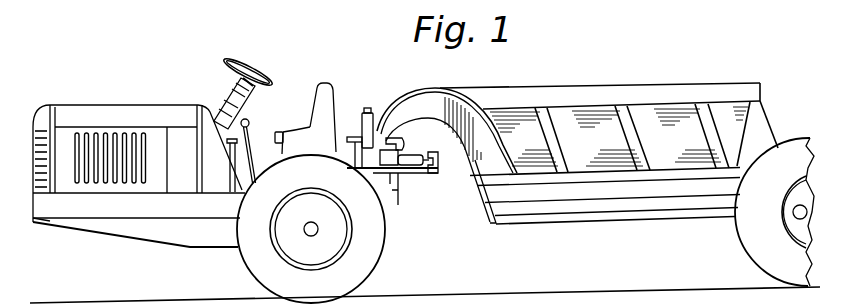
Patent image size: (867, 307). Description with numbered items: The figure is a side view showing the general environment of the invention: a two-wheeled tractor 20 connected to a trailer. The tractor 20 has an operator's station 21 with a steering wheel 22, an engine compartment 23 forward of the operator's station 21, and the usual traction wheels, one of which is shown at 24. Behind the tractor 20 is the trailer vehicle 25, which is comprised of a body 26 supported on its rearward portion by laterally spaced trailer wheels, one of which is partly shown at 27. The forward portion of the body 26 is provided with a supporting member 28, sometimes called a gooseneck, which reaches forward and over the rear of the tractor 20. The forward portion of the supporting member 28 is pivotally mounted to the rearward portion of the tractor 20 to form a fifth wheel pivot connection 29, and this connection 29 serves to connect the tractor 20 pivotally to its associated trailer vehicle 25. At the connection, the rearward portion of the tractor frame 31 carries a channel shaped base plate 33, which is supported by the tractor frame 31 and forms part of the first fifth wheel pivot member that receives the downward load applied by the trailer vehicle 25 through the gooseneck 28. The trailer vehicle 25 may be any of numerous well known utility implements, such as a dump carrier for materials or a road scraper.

The two-wheeled tractor 20 is at (186, 100).
The operator's station 21 is at (311, 92).
The steering wheel 22 is at (252, 73).
The engine compartment 23 is at (105, 115).
The traction wheel 24 is at (365, 258).
The trailer vehicle 25 is at (681, 84).
The body 26 is at (580, 116).
The trailer wheel 27 is at (752, 252).
The supporting member 28 is at (447, 96).
The fifth wheel pivot connection 29 is at (362, 111).
The tractor frame 31 is at (398, 204).
The channel shaped base plate 33 is at (430, 175).